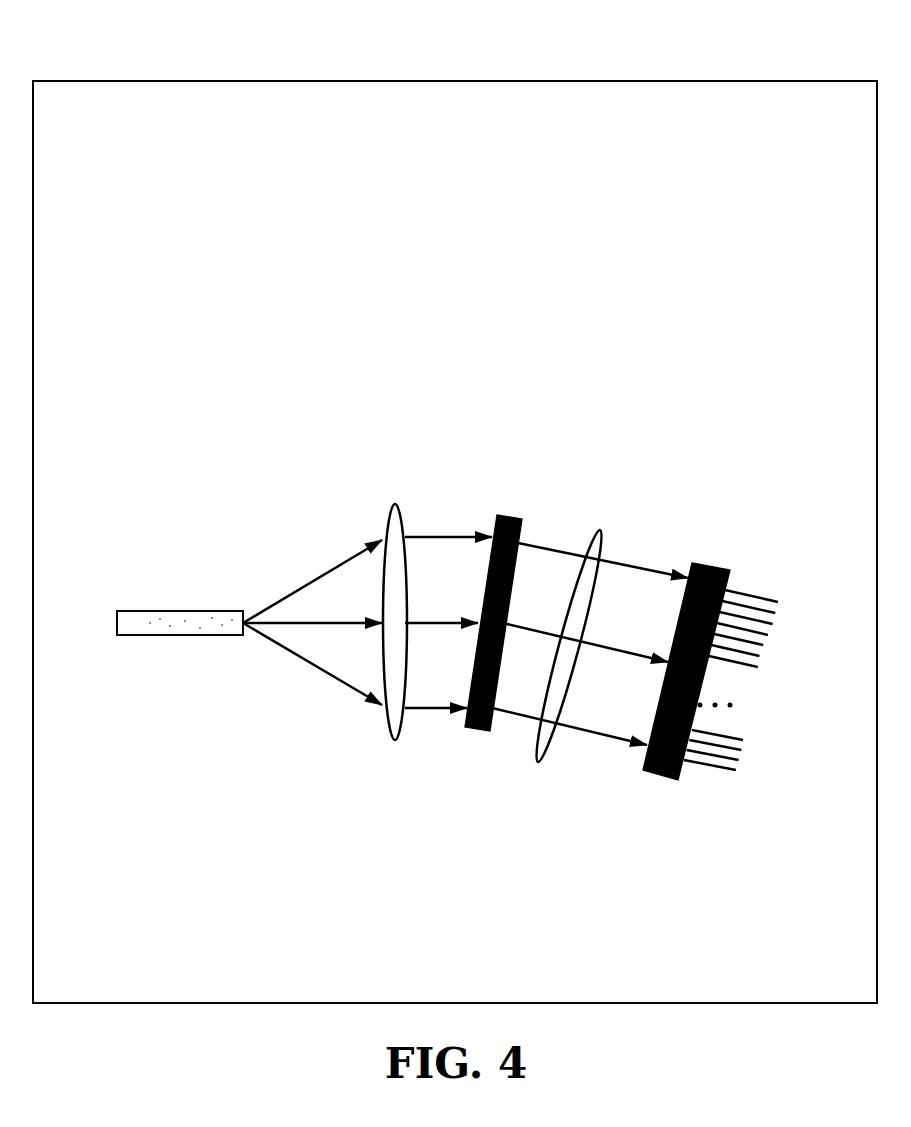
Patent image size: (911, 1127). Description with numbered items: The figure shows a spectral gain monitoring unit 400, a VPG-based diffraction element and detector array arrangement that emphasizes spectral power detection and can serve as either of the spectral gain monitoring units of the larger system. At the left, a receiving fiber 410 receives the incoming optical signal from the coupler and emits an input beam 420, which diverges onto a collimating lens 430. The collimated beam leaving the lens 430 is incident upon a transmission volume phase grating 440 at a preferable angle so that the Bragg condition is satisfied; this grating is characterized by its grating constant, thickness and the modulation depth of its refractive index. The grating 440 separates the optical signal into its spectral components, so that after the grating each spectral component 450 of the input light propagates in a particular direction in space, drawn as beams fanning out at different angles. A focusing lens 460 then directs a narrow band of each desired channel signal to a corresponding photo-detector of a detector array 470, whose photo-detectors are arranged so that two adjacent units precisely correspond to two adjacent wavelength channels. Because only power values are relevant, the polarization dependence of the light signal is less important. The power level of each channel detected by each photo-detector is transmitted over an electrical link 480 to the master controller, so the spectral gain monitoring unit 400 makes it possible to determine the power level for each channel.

The spectral gain monitoring unit 400 is at (430, 43).
The receiving fiber 410 is at (178, 611).
The input beam 420 is at (288, 593).
The collimating lens 430 is at (388, 520).
The transmission volume phase grating (VPG) 440 is at (497, 515).
The spectral component 450 is at (550, 547).
The focusing lens 460 is at (592, 528).
The detector array 470 is at (697, 563).
The electrical link 480 is at (745, 593).